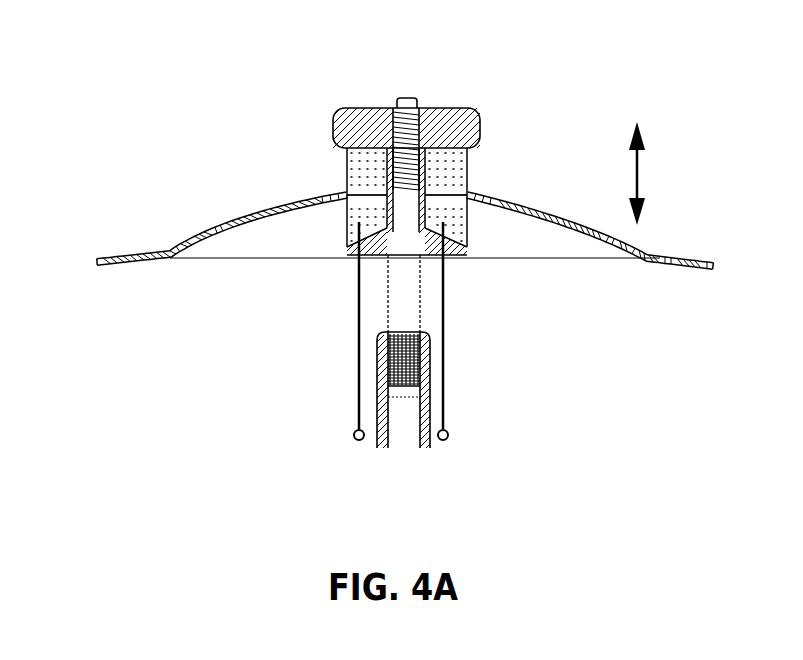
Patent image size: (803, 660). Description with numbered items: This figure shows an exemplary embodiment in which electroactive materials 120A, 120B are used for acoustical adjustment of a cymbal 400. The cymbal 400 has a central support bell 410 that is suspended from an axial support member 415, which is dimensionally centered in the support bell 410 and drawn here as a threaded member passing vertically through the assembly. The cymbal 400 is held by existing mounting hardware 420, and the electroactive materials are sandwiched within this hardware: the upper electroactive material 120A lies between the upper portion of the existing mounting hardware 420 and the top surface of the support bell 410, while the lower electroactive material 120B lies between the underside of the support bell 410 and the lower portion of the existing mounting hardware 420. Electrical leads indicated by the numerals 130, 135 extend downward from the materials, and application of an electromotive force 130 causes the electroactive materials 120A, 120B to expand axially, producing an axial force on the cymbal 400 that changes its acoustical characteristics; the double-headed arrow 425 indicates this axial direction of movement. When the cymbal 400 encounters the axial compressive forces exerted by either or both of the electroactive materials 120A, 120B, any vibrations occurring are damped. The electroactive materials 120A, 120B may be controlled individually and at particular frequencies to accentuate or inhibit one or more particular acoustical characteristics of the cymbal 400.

The cymbal 400 is at (112, 267).
The support bell 410 is at (242, 217).
The axial support member 415 is at (402, 110).
The existing mounting hardware 420 is at (355, 122).
The direction of vertical movement 425 is at (640, 170).
The electroactive material 120A is at (452, 178).
The electroactive material 120B is at (468, 220).
The electromotive force 130 is at (358, 393).
The electrical lead 135 is at (443, 331).